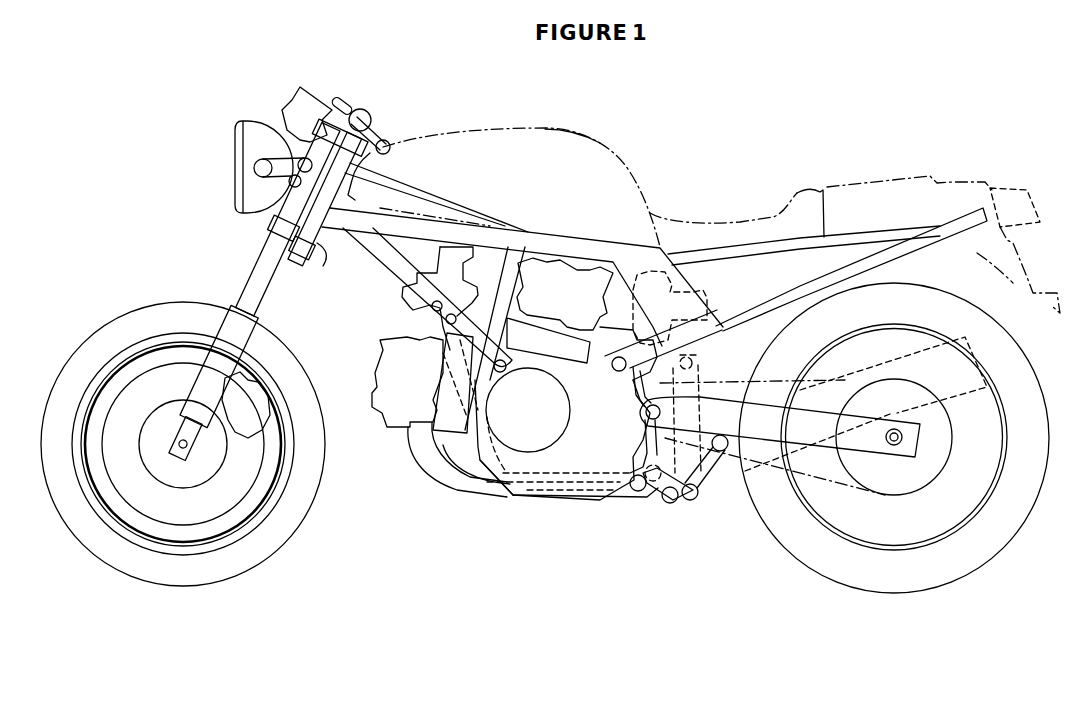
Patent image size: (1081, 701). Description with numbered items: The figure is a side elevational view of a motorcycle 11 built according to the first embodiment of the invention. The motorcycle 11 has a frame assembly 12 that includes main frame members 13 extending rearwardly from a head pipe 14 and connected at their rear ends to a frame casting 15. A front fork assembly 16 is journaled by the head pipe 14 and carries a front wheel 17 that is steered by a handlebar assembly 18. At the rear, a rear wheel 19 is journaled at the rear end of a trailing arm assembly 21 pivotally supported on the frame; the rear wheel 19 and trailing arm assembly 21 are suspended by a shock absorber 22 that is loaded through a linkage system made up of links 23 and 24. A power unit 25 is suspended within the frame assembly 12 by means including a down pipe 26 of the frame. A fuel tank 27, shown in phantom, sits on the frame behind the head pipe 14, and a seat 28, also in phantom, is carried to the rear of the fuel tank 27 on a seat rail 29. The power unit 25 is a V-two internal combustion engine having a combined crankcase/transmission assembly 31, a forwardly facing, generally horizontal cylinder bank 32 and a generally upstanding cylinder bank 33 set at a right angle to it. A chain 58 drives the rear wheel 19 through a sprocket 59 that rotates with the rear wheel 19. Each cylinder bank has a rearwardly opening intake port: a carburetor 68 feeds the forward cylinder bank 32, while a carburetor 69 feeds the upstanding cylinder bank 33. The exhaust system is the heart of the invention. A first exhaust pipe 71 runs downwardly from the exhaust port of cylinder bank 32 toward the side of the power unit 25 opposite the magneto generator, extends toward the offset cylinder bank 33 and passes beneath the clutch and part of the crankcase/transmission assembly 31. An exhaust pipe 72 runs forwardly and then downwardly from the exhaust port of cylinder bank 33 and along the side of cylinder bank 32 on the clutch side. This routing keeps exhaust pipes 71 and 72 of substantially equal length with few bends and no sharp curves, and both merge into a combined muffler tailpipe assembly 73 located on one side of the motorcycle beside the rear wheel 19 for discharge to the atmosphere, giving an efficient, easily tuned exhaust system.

The motorcycle 11 is at (655, 182).
The frame assembly 12 is at (570, 235).
The main frame members 13 is at (546, 228).
The head pipe 14 is at (325, 253).
The frame casting 15 is at (717, 343).
The front fork assembly 16 is at (258, 270).
The front wheel 17 is at (173, 305).
The handlebar assembly 18 is at (383, 123).
The rear wheel 19 is at (812, 565).
The trailing arm assembly 21 is at (900, 453).
The shock absorber 22 is at (707, 393).
The link 23 is at (733, 470).
The link 24 is at (688, 500).
The power unit 25 is at (508, 500).
The down pipe 26 is at (383, 272).
The fuel tank 27 is at (553, 125).
The seat 28 is at (740, 220).
The seat rail 29 is at (828, 188).
The crankcase/transmission assembly 31 is at (543, 503).
The cylinder bank 32 is at (375, 368).
The cylinder bank 33 is at (580, 270).
The chain 58 is at (820, 368).
The sprocket 59 is at (953, 447).
The carburetor 68 is at (402, 308).
The carburetor 69 is at (707, 290).
The first exhaust pipe 71 is at (410, 450).
The exhaust pipe 72 is at (452, 470).
The combined muffler tailpipe assembly 73 is at (970, 337).